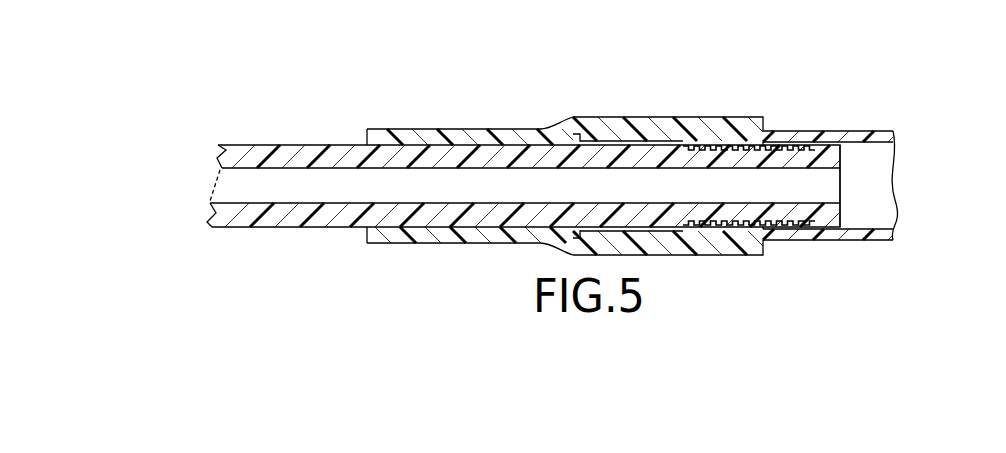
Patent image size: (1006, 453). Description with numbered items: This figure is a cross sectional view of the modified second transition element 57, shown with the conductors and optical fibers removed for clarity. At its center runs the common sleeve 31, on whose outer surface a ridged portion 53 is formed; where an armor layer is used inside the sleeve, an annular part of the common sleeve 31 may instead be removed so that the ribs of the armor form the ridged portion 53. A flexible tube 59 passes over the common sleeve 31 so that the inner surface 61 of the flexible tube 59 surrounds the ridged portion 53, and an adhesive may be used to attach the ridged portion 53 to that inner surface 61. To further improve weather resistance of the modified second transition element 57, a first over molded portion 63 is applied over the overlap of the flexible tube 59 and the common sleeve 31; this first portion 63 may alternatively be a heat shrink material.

The common sleeve 31 is at (259, 152).
The ridged portion 53 is at (783, 146).
The modified second transition element 57 is at (580, 72).
The flexible tube 59 is at (872, 135).
The inner surface 61 is at (852, 145).
The first over molded portion 63 is at (663, 117).